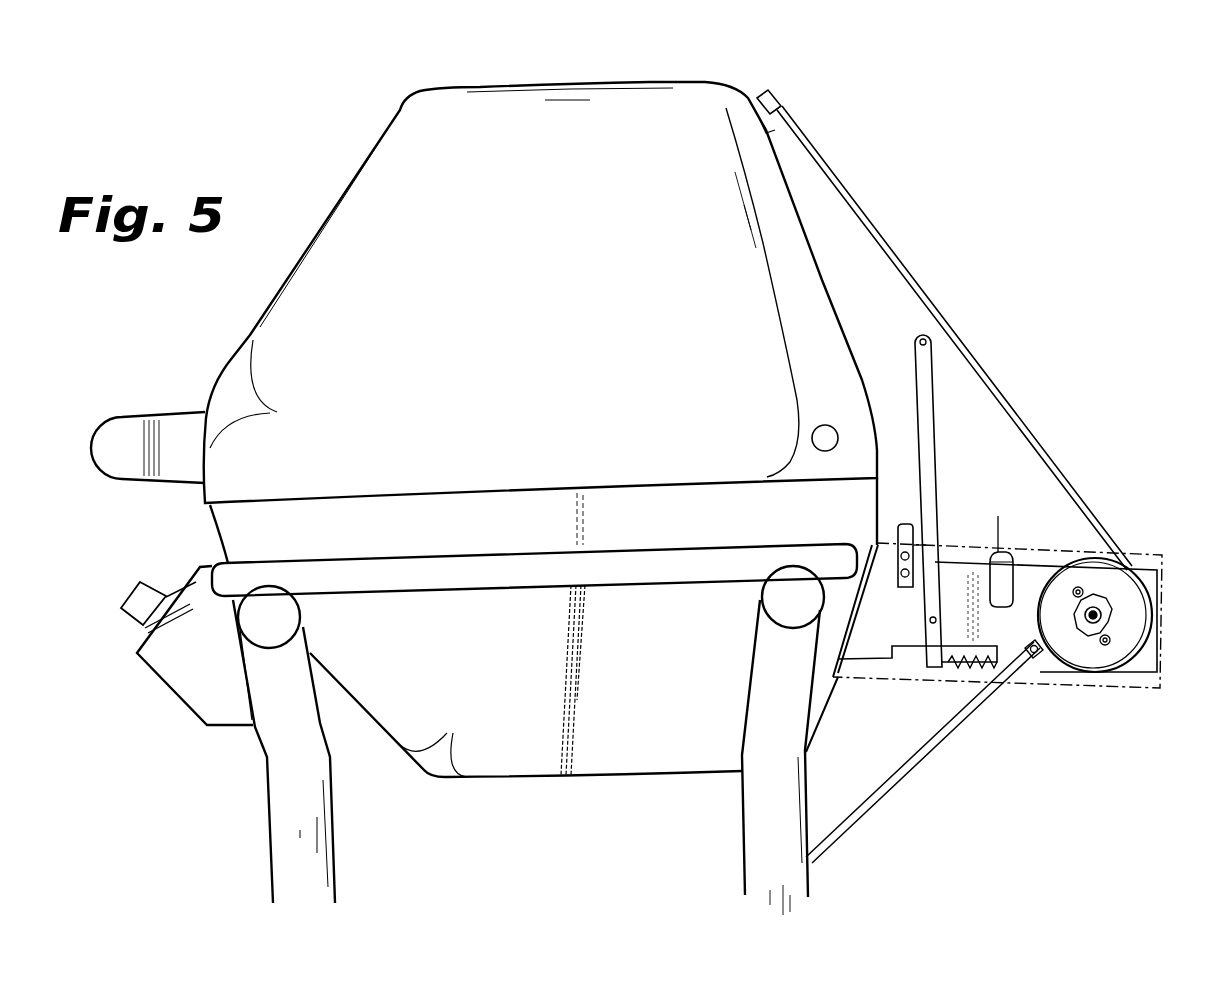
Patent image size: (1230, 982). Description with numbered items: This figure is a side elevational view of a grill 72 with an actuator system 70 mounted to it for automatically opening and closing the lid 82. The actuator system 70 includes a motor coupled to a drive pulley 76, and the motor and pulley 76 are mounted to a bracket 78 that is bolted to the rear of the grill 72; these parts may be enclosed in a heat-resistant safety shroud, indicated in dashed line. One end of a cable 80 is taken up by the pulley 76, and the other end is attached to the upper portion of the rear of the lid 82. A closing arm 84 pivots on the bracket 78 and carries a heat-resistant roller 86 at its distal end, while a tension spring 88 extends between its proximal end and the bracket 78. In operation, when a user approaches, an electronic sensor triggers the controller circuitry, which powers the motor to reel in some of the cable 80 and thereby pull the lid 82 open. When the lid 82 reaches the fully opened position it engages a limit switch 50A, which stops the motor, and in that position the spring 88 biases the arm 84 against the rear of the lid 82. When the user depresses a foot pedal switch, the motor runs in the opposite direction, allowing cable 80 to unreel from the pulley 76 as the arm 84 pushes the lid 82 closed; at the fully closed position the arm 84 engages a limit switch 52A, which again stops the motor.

The actuator system 70 is at (1146, 533).
The grill 72 is at (340, 178).
The drive pulley 76 is at (1093, 655).
The bracket 78 is at (890, 632).
The cable 80 is at (893, 260).
The lid 82 is at (628, 82).
The closing arm 84 is at (934, 463).
The heat-resistant roller 86 is at (921, 328).
The tension spring 88 is at (969, 668).
The limit switch 50A is at (1006, 549).
The limit switch 52A is at (897, 535).